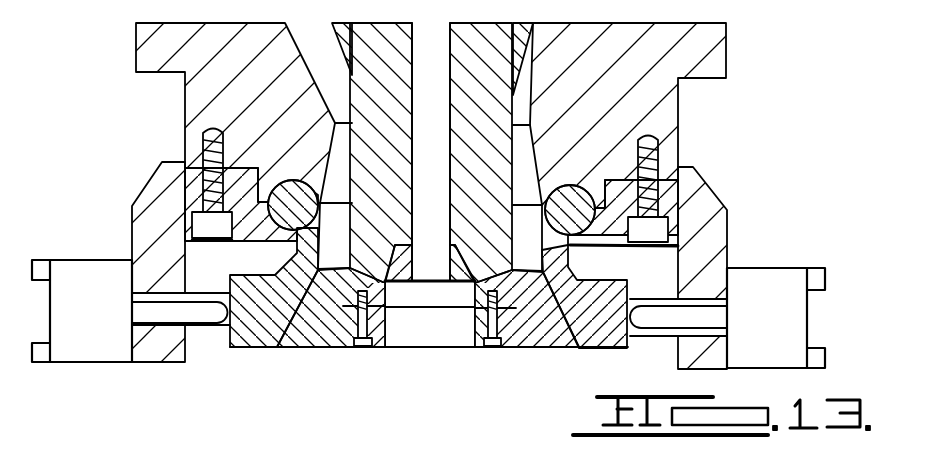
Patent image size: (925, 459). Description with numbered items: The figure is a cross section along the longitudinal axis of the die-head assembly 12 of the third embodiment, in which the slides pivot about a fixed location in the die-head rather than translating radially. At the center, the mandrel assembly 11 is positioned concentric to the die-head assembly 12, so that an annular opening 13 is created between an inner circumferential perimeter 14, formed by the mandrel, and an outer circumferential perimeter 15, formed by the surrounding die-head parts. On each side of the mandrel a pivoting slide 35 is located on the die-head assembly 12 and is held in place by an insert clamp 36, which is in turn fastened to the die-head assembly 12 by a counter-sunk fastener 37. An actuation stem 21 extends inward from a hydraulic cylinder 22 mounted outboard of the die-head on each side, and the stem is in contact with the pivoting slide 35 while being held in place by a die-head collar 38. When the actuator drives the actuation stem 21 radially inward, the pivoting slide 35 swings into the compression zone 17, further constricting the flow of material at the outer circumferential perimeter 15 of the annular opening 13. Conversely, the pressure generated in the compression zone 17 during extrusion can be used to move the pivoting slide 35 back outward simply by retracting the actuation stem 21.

The mandrel assembly 11 is at (500, 143).
The die-head assembly 12 is at (657, 94).
The annular opening 13 is at (560, 348).
The inner circumferential perimeter 14 is at (552, 324).
The outer circumferential perimeter 15 is at (279, 345).
The compression zone 17 is at (303, 322).
The actuation stem 21 is at (206, 322).
The hydraulic cylinder 22 is at (79, 268).
The pivoting slide 35 is at (243, 330).
The insert clamp 36 is at (670, 197).
The counter-sunk fastener 37 is at (670, 223).
The die-head collar 38 is at (707, 233).